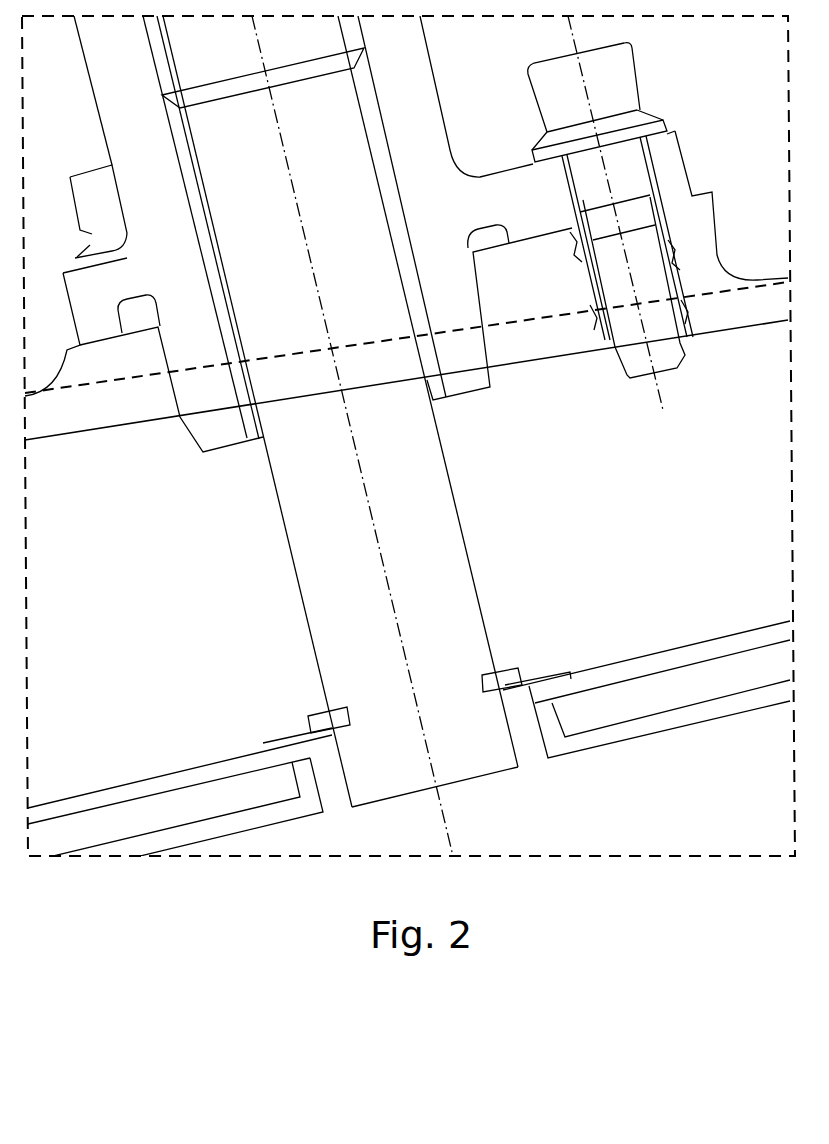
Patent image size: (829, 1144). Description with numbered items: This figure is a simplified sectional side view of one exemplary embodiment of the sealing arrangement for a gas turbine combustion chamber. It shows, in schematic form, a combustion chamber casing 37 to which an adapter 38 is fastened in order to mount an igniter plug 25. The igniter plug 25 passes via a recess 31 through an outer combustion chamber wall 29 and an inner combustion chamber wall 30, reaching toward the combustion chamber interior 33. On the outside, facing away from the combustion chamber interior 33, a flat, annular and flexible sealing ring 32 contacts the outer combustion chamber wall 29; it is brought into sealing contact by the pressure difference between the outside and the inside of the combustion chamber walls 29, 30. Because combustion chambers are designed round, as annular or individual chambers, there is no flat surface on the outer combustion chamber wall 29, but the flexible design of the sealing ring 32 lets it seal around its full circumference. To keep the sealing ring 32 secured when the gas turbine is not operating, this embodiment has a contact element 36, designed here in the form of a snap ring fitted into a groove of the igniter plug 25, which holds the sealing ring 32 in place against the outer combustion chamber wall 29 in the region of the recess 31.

The igniter plug 25 is at (430, 453).
The outer combustion chamber wall 29 is at (662, 665).
The inner combustion chamber wall 30 is at (667, 720).
The recess 31 is at (527, 750).
The sealing ring 32 is at (567, 670).
The combustion chamber interior 33 is at (494, 826).
The contact element 36 is at (498, 678).
The combustion chamber casing 37 is at (760, 315).
The adapter 38 is at (443, 157).